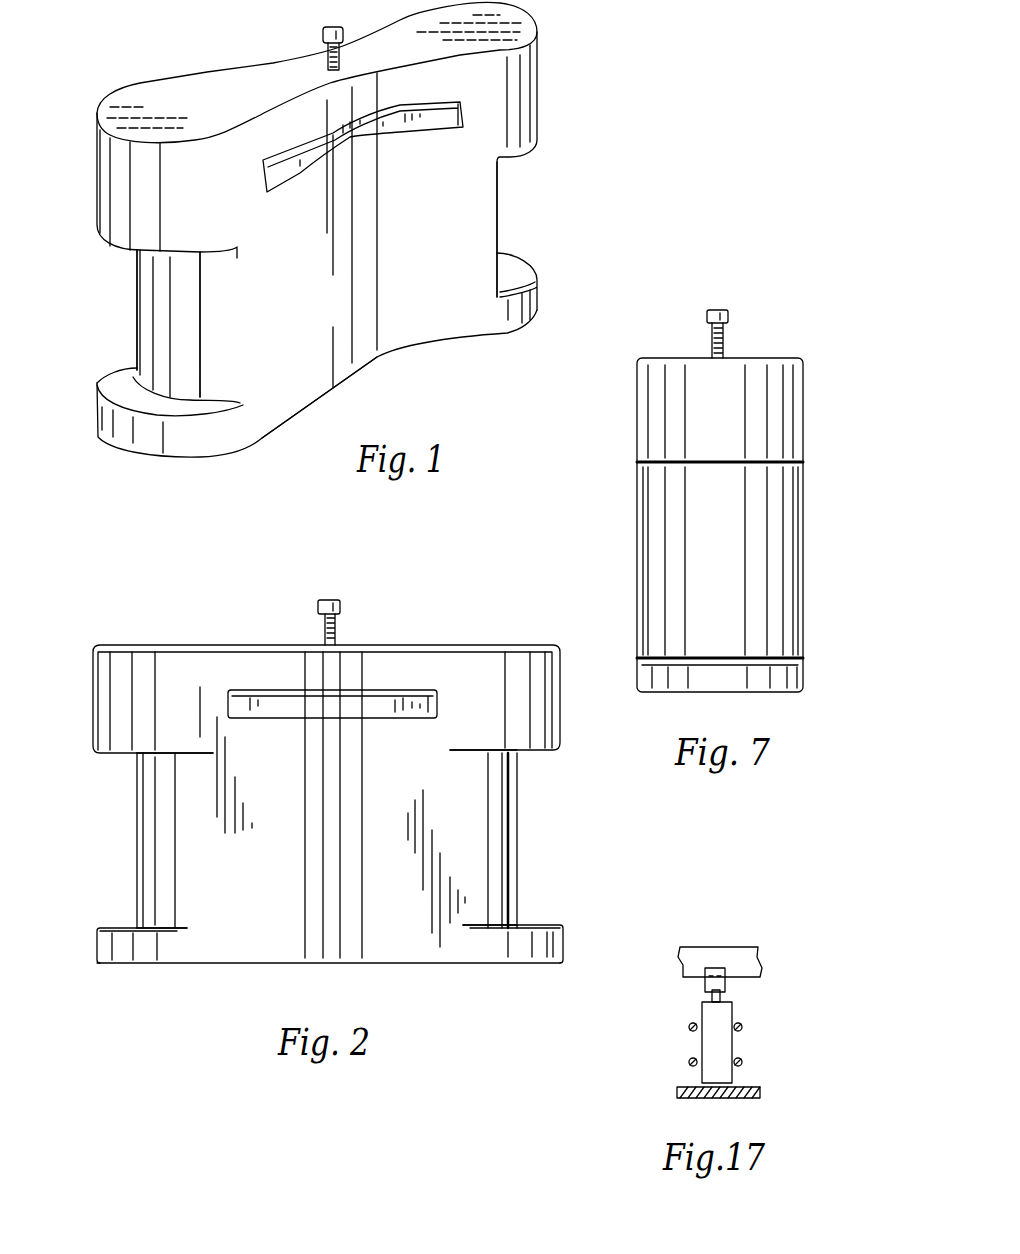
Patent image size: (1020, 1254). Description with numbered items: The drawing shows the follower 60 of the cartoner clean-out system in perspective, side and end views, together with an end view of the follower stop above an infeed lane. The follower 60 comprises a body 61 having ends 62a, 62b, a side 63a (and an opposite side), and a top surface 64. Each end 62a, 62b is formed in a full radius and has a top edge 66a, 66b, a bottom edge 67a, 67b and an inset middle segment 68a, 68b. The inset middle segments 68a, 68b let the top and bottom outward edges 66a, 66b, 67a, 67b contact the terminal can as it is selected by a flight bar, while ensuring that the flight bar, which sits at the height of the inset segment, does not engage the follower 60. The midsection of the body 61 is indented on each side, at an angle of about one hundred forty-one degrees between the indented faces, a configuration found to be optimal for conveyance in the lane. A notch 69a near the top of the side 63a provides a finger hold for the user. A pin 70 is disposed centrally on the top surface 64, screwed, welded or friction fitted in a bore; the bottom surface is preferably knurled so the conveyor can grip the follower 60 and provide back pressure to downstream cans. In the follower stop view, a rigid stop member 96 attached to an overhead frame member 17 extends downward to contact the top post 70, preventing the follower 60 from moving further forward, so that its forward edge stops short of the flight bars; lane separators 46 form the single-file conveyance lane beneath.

In FIG. 1, the follower 60 is at (326, 229).
In FIG. 2, the follower 60 is at (323, 787).
In FIG. 7, the follower 60 is at (733, 485).
In FIG. 17, the follower 60 is at (727, 1078).
In FIG. 1, the body 61 is at (493, 327).
In FIG. 2, the body 61 is at (197, 952).
In FIG. 1, the end 62a is at (122, 327).
In FIG. 2, the end 62a is at (122, 843).
In FIG. 1, the end 62b is at (515, 200).
In FIG. 2, the end 62b is at (535, 807).
In FIG. 1, the side 63a is at (338, 314).
In FIG. 2, the side 63a is at (257, 868).
In FIG. 1, the top surface 64 is at (243, 107).
In FIG. 2, the top surface 64 is at (492, 643).
In FIG. 1, the top edge 66a is at (95, 178).
In FIG. 2, the top edge 66a is at (98, 688).
In FIG. 7, the top edge 66a is at (797, 440).
In FIG. 1, the top edge 66b is at (530, 90).
In FIG. 2, the top edge 66b is at (560, 695).
In FIG. 1, the bottom edge 67a is at (101, 415).
In FIG. 2, the bottom edge 67a is at (107, 930).
In FIG. 7, the bottom edge 67a is at (800, 683).
In FIG. 1, the bottom edge 67b is at (535, 302).
In FIG. 2, the bottom edge 67b is at (542, 930).
In FIG. 1, the inset middle segment 68a is at (146, 290).
In FIG. 2, the inset middle segment 68a is at (145, 790).
In FIG. 7, the inset middle segment 68a is at (645, 518).
In FIG. 2, the inset middle segment 68b is at (497, 860).
In FIG. 1, the notch 69a is at (411, 147).
In FIG. 2, the notch 69a is at (409, 732).
In FIG. 1, the pin 70 is at (308, 29).
In FIG. 2, the pin 70 is at (360, 609).
In FIG. 7, the pin 70 is at (752, 311).
In FIG. 17, the pin 70 is at (722, 997).
In FIG. 17, the overhead frame member 17 is at (744, 950).
In FIG. 17, the stop member 96 is at (705, 988).
In FIG. 17, the lane separator 46 is at (689, 1027).